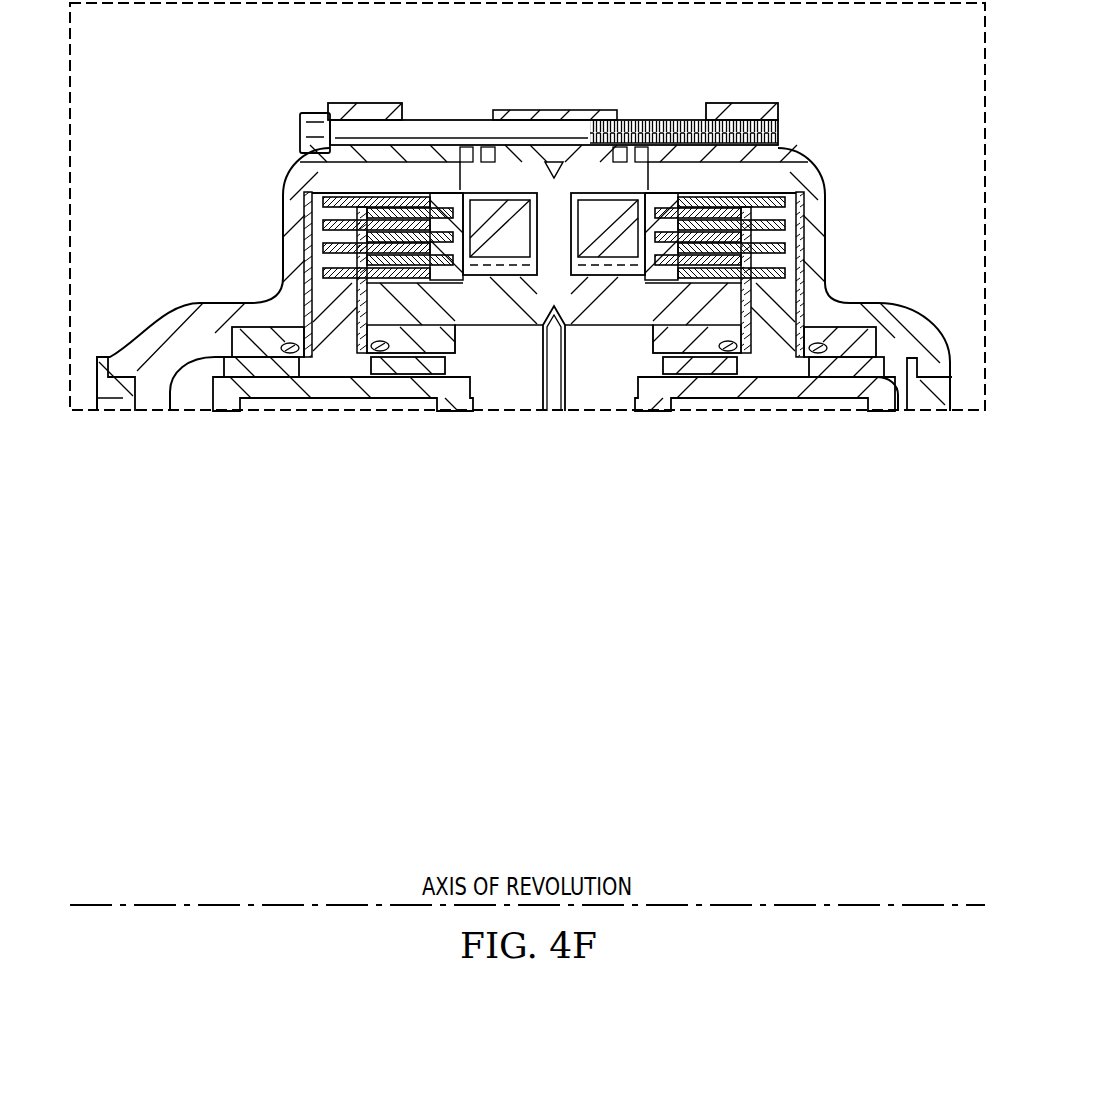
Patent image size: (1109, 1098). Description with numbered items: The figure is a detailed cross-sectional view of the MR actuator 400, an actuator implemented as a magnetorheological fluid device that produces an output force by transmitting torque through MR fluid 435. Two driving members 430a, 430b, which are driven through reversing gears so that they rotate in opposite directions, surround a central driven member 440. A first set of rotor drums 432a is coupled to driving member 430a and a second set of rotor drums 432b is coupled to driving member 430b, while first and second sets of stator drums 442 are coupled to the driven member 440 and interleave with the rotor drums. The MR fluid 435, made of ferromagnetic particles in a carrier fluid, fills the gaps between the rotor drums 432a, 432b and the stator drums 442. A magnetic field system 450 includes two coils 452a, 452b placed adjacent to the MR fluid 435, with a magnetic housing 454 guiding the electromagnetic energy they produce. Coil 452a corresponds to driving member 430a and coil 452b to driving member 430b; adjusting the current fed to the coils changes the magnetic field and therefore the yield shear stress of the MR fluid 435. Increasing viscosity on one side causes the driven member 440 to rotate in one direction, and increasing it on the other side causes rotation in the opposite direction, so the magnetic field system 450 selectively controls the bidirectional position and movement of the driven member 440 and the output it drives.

The MR actuator 400 is at (768, 80).
The driving member 430a is at (300, 403).
The driving member 430b is at (807, 403).
The first set of rotor drums 432a is at (327, 187).
The second set of rotor drums 432b is at (795, 163).
The MR fluid 435 is at (302, 240).
The driven member 440 is at (503, 172).
The stator drums 442 is at (445, 215).
The magnetic field system 450 is at (540, 78).
The coil 452a is at (508, 248).
The coil 452b is at (623, 213).
The magnetic housing 454 is at (475, 145).